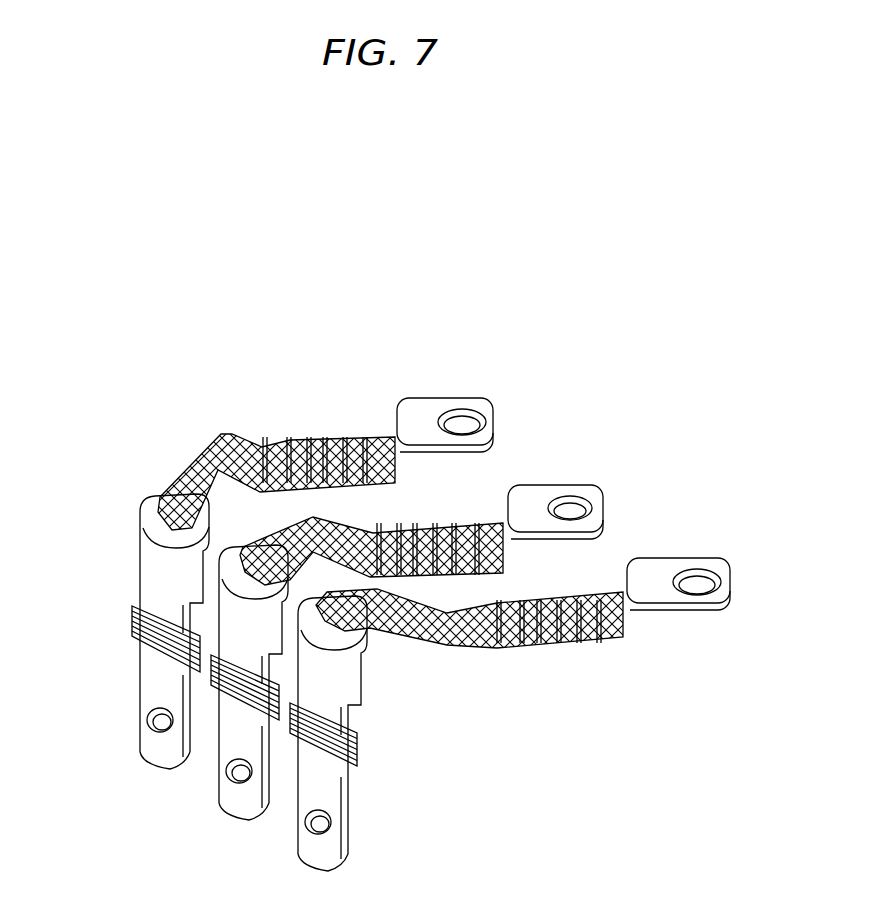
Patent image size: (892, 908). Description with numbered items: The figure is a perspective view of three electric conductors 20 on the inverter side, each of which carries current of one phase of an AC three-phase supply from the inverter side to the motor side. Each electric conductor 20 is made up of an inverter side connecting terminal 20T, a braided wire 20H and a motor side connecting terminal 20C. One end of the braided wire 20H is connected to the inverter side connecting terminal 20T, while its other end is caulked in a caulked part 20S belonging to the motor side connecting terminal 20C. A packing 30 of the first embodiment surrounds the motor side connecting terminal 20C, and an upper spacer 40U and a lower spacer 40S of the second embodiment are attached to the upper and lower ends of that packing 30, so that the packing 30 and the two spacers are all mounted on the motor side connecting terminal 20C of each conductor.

The electric conductor 20 is at (518, 372).
The braided wire 20H is at (274, 436).
The inverter side connecting terminal 20T is at (418, 406).
The caulked part 20S is at (140, 543).
The upper spacer 40U is at (137, 602).
The packing 30 is at (132, 614).
The lower spacer 40S is at (135, 640).
The motor side connecting terminal 20C is at (142, 700).